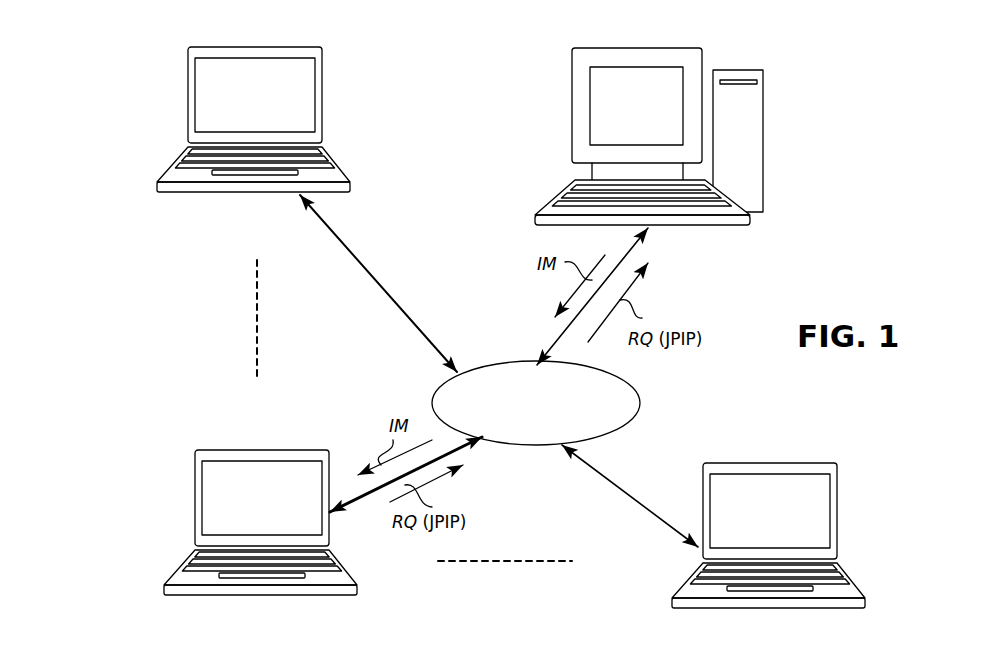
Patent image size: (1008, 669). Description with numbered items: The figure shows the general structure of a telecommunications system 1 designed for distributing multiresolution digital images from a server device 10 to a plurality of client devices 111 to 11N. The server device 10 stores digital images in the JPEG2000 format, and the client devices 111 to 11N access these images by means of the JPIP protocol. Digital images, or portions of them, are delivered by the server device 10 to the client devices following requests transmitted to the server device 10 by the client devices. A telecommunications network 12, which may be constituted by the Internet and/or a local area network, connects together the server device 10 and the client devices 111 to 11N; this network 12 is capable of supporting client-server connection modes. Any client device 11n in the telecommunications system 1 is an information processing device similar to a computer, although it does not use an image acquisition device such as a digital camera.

The telecommunications system 1 is at (104, 233).
The server device 10 is at (691, 83).
The client device 111 is at (193, 103).
The client device 11n is at (202, 508).
The client device 11N is at (703, 518).
The telecommunications network 12 is at (535, 441).